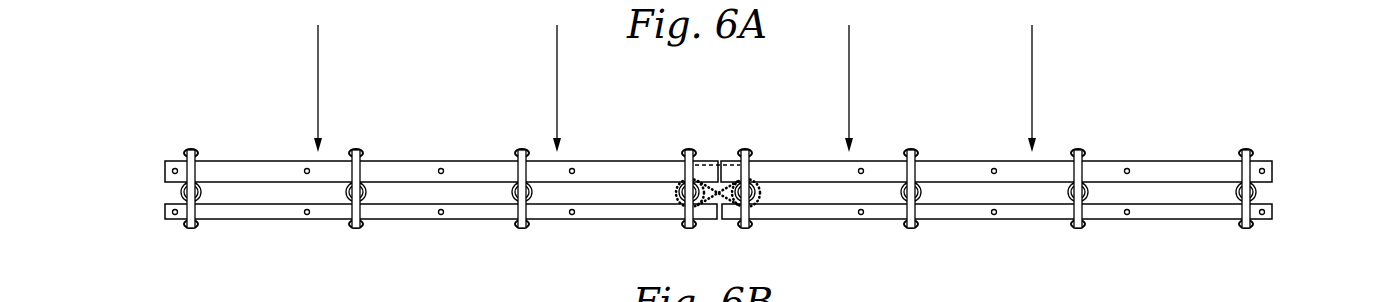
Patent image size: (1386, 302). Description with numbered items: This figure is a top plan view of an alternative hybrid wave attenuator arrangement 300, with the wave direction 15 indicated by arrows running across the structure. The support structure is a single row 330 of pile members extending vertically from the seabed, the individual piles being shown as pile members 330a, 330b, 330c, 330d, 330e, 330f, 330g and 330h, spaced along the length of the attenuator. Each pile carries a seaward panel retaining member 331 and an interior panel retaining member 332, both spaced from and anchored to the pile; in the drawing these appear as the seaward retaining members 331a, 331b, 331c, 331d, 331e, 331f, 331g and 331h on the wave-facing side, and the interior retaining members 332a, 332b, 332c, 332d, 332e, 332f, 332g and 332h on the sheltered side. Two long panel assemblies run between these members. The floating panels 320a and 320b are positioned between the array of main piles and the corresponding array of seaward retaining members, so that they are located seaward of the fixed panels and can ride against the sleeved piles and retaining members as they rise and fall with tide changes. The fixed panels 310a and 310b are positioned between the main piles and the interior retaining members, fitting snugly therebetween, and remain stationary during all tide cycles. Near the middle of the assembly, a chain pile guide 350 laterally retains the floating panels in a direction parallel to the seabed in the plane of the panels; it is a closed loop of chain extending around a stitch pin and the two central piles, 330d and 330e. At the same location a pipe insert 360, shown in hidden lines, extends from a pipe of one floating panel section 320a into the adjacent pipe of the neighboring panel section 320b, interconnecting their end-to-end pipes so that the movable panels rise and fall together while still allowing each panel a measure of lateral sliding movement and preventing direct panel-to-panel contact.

The wave direction 15 is at (318, 40).
The alternative wave attenuator arrangement 300 is at (1236, 70).
The fixed panel 310a is at (248, 217).
The fixed panel 310b is at (1162, 218).
The floating panel 320a is at (242, 163).
The floating panel 320b is at (1155, 163).
The row of pile members 330 is at (162, 190).
The seaward panel retaining member 331 is at (167, 143).
The interior panel retaining member 332 is at (162, 230).
The pile member 330a is at (203, 195).
The pile member 330b is at (370, 197).
The pile member 330c is at (538, 197).
The pile member 330d is at (677, 192).
The pile member 330e is at (753, 193).
The pile member 330f is at (923, 197).
The pile member 330g is at (1090, 197).
The pile member 330h is at (1260, 197).
The seaward panel retaining member 331a is at (198, 155).
The seaward panel retaining member 331b is at (363, 155).
The seaward panel retaining member 331c is at (518, 155).
The seaward panel retaining member 331d is at (685, 153).
The seaward panel retaining member 331e is at (747, 153).
The seaward panel retaining member 331f is at (917, 155).
The seaward panel retaining member 331g is at (1083, 155).
The seaward panel retaining member 331h is at (1252, 155).
The interior panel retaining member 332a is at (183, 230).
The interior panel retaining member 332b is at (350, 230).
The interior panel retaining member 332c is at (522, 224).
The interior panel retaining member 332d is at (685, 227).
The interior panel retaining member 332e is at (752, 227).
The interior panel retaining member 332f is at (905, 230).
The interior panel retaining member 332g is at (1073, 230).
The interior panel retaining member 332h is at (1253, 227).
The chain pile guide 350 is at (727, 203).
The pipe insert 360 is at (722, 163).